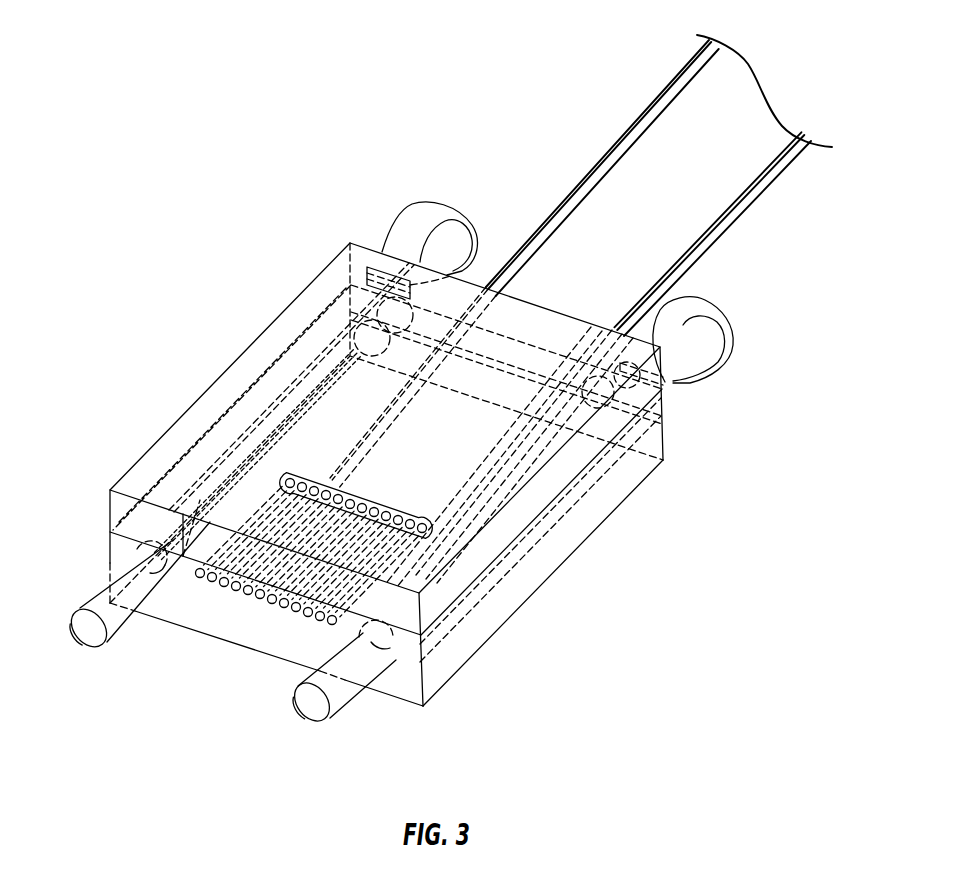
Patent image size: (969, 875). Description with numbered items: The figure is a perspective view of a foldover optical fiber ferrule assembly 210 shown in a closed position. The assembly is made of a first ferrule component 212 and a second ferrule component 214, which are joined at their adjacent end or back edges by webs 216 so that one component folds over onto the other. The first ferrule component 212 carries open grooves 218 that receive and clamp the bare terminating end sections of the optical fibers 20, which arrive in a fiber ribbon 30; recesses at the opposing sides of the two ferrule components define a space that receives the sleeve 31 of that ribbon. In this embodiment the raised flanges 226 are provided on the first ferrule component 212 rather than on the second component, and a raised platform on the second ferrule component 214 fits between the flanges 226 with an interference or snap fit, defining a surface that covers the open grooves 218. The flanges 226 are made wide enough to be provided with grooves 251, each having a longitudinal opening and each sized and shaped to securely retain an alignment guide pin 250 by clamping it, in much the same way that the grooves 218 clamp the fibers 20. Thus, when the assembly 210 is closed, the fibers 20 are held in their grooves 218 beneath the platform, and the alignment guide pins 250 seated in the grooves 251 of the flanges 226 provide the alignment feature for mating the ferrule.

The foldover optical fiber ferrule assembly 210 is at (228, 238).
The first ferrule component 212 is at (597, 522).
The second ferrule component 214 is at (208, 413).
The webs 216 is at (430, 212).
The grooves 218 is at (293, 607).
The optical fibers 20 is at (204, 580).
The raised flanges 226 is at (120, 540).
The alignment guide pins 250 is at (110, 637).
The grooves 251 is at (152, 573).
The fiber ribbon 30 is at (814, 173).
The sleeve 31 is at (737, 183).